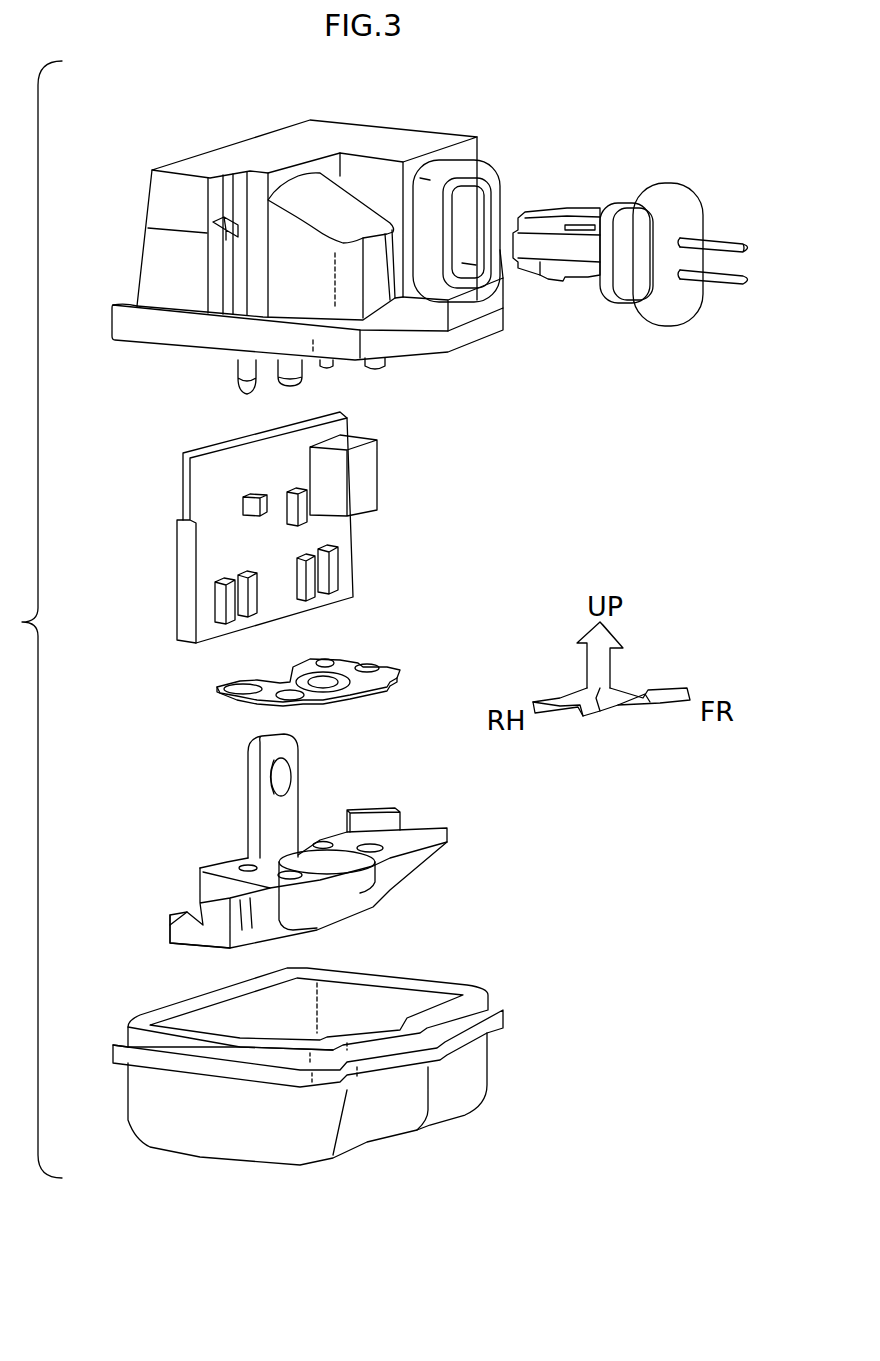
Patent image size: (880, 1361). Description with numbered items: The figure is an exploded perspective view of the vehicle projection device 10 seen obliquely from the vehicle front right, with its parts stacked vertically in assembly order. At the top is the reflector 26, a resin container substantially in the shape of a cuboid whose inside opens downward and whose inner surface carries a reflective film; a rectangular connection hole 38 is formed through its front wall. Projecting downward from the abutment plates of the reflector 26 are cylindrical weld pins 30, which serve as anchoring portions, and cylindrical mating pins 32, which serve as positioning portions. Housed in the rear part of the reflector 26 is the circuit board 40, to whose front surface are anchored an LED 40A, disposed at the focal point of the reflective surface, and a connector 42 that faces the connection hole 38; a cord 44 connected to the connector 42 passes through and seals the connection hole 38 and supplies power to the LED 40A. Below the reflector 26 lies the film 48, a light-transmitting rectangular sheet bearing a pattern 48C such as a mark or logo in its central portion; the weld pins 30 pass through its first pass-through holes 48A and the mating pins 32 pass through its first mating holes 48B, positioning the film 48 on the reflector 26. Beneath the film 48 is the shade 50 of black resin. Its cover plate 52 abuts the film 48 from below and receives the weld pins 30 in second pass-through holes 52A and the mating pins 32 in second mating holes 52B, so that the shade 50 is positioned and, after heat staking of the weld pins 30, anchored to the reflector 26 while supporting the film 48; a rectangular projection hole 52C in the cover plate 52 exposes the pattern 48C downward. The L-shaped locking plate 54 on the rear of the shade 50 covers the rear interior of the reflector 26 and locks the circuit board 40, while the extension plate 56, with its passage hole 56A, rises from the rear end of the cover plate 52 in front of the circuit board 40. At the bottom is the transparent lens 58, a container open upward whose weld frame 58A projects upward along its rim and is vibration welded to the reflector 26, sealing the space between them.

The vehicle projection device 10 is at (616, 435).
The reflector 26 is at (233, 131).
The weld pins 30 is at (295, 385).
The mating pins 32 is at (238, 388).
The connection hole 38 is at (480, 200).
The circuit board 40 is at (182, 486).
The LED 40A is at (265, 498).
The connector 42 is at (383, 462).
The cord 44 is at (717, 243).
The film 48 is at (378, 688).
The first pass-through holes 48A is at (375, 665).
The first mating holes 48B is at (325, 661).
The pattern 48C is at (343, 695).
The shade 50 is at (455, 820).
The cover plate 52 is at (417, 828).
The second pass-through holes 52A is at (400, 860).
The second mating holes 52B is at (323, 845).
The projection hole 52C is at (368, 893).
The locking plate 54 is at (170, 918).
The extension plate 56 is at (250, 803).
The passage hole 56A is at (292, 770).
The lens 58 is at (485, 1067).
The weld frame 58A is at (490, 992).